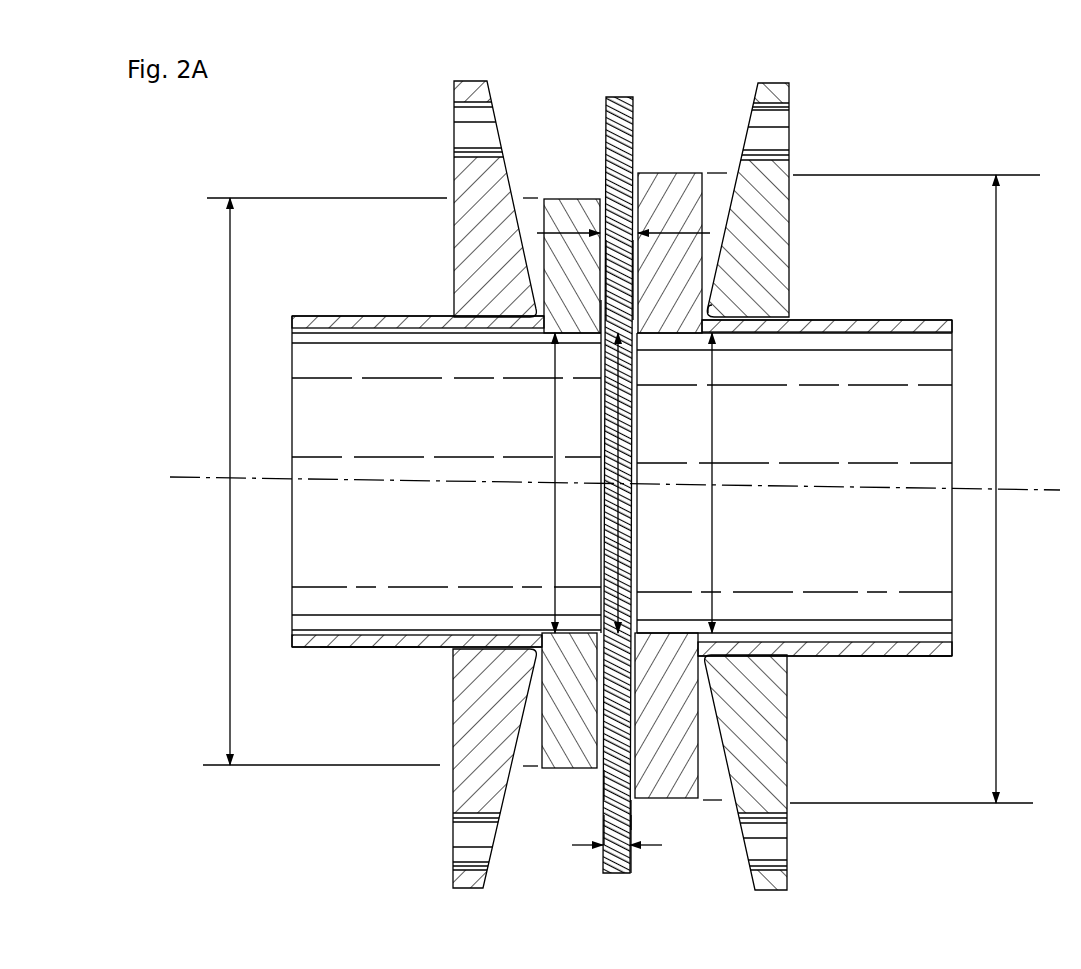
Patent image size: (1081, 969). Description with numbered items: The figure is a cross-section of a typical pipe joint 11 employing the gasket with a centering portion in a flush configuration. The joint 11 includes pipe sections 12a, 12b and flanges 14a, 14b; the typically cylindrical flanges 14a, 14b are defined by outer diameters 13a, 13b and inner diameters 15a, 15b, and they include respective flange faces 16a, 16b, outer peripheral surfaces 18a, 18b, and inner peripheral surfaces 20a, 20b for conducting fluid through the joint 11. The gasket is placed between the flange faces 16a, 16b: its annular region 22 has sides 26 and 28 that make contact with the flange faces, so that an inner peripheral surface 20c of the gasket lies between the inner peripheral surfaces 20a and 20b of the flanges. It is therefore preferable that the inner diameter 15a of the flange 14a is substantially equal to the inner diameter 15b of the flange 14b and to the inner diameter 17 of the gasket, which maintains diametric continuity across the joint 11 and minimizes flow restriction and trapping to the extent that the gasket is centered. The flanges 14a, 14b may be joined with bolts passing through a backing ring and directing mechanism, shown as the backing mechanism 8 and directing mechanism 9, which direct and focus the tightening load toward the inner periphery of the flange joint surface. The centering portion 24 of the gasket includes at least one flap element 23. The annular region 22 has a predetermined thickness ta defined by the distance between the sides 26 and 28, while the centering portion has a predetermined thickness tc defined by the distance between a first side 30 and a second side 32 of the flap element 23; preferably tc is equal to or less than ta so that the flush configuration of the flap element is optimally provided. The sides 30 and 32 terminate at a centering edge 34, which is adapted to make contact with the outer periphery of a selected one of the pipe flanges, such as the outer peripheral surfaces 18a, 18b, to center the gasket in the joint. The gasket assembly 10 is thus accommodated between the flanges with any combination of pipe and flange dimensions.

The backing mechanism 8 is at (770, 207).
The directing mechanism 9 is at (725, 300).
The central plate 10 is at (586, 82).
The pipe joint 11 is at (832, 115).
The pipe section 12a is at (890, 308).
The pipe section 12b is at (369, 308).
The outer diameter 13a is at (1012, 380).
The outer diameter 13b is at (217, 378).
The flange 14a is at (668, 180).
The flange 14b is at (562, 210).
The inner diameter 15a is at (714, 520).
The inner diameter 15b is at (553, 518).
The flange face 16a is at (634, 262).
The flange face 16b is at (610, 262).
The inner diameter 17 is at (622, 387).
The outer peripheral surface 18a is at (693, 805).
The outer peripheral surface 18b is at (557, 772).
The inner peripheral surface 20a is at (900, 633).
The inner peripheral surface 20b is at (374, 633).
The inner peripheral surface 20c is at (635, 613).
The annular region 22 is at (585, 307).
The flap element 23 is at (631, 857).
The centering portion 24 is at (645, 811).
The side 26 is at (633, 272).
The side 28 is at (602, 295).
The first side 30 is at (632, 823).
The second side 32 is at (598, 826).
The centering edge 34 is at (615, 786).
The thickness of the annular region ta is at (670, 237).
The thickness of the centering portion tc is at (580, 850).